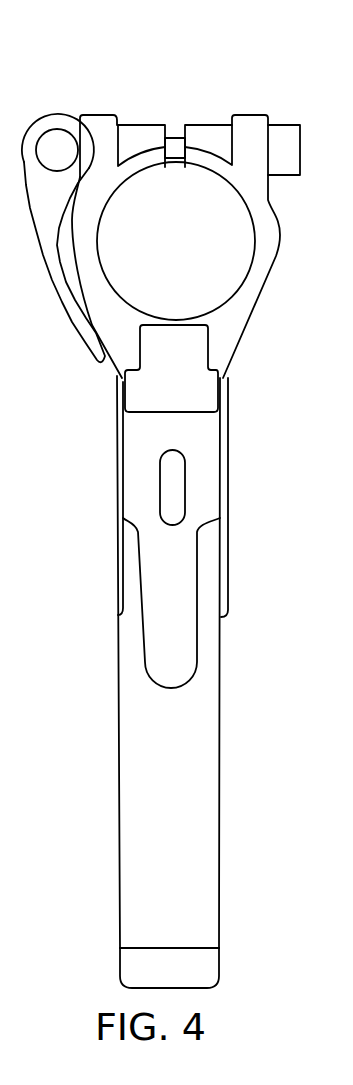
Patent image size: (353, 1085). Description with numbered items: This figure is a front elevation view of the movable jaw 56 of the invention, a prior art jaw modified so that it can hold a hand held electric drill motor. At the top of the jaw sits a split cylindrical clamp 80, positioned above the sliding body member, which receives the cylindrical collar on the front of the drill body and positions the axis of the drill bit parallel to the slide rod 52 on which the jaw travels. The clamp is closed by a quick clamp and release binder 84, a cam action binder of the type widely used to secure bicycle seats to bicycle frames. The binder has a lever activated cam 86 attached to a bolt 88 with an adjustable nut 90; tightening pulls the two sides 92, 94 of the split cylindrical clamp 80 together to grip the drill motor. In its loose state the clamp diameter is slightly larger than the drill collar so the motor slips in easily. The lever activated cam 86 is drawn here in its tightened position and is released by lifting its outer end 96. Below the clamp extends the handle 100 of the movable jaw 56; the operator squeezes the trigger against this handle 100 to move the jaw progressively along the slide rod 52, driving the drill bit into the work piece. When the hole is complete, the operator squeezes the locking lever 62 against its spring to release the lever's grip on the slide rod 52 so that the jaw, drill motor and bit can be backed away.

The slide rod 52 is at (170, 478).
The movable jaw 56 is at (120, 757).
The locking lever 62 is at (190, 681).
The split cylindrical clamp 80 is at (282, 228).
The quick clamp and release binder 84 is at (42, 126).
The lever activated cam 86 is at (60, 147).
The bolt 88 is at (170, 137).
The adjustable nut 90 is at (287, 124).
The side of the split cylindrical clamp 92 is at (152, 124).
The side of the split cylindrical clamp 94 is at (220, 124).
The outer end 96 is at (105, 352).
The handle 100 is at (217, 737).